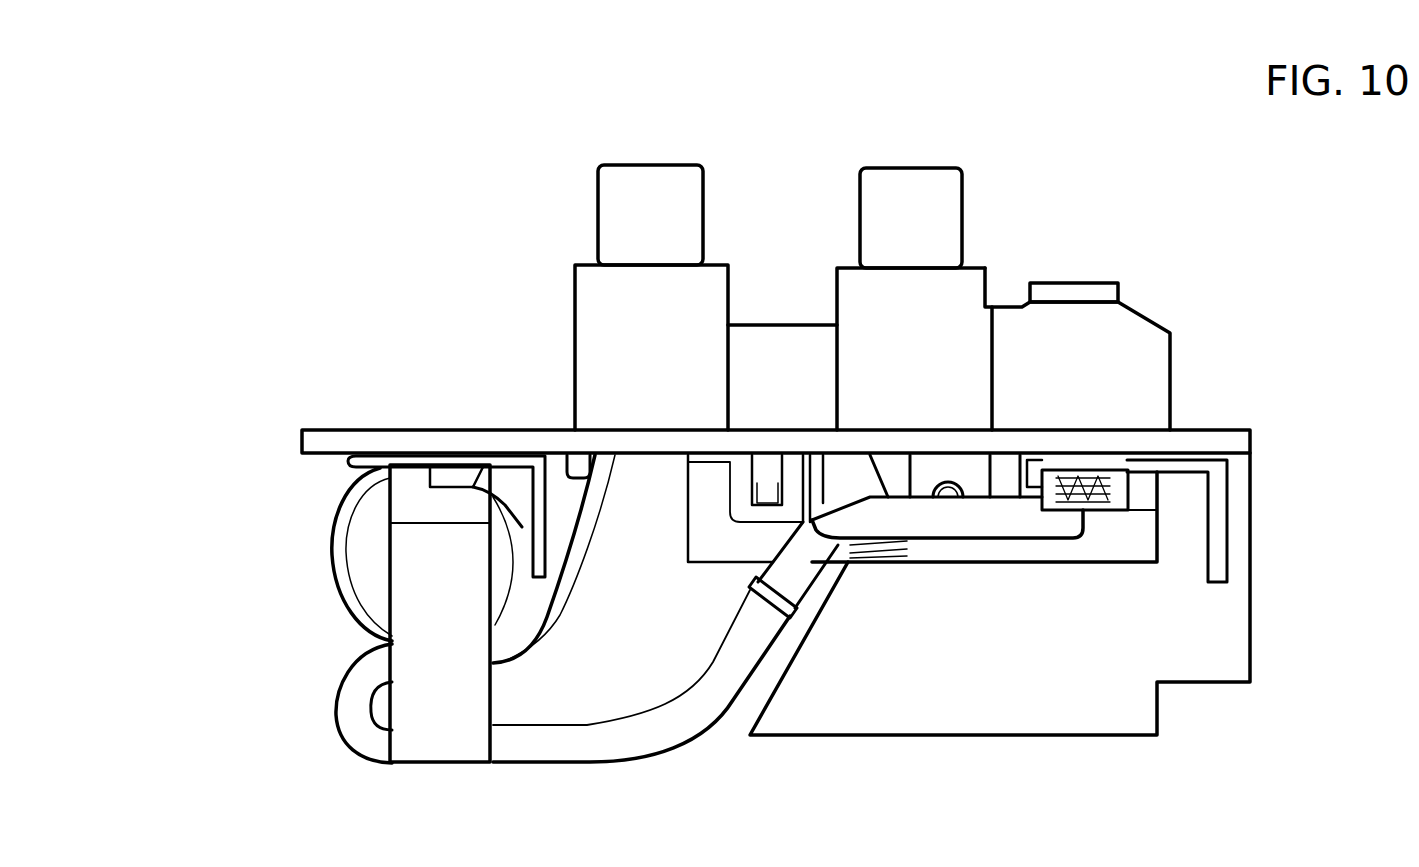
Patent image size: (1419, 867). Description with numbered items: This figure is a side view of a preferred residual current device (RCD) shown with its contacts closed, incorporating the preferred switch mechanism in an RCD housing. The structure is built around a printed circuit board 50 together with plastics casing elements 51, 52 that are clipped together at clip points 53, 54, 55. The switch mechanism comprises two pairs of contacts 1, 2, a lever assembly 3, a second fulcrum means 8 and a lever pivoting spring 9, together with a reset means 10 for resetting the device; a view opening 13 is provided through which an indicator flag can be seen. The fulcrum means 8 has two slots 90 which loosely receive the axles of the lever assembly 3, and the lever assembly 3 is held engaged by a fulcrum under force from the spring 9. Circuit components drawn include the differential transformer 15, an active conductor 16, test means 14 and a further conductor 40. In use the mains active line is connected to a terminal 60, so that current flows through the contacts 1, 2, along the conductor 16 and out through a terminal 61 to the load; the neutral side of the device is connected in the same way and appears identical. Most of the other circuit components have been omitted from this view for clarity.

The contact pair 1 is at (1113, 465).
The contact pair 2 is at (1133, 510).
The lever assembly 3 is at (1015, 527).
The second fulcrum means 8 is at (938, 470).
The lever pivoting spring 9 is at (850, 545).
The reset means 10 is at (922, 201).
The view opening 13 is at (1022, 470).
The test means 14 is at (648, 187).
The differential transformer 15 is at (427, 582).
The active conductor 16 is at (564, 745).
The conductor 40 is at (340, 522).
The printed circuit board 50 is at (362, 441).
The plastics casing element 51 is at (607, 298).
The plastics casing element 52 is at (1198, 647).
The clip 53 is at (578, 465).
The clip 54 is at (768, 495).
The clip 55 is at (1143, 495).
The terminal 60 is at (1217, 518).
The terminal 61 is at (538, 557).
The slot 90 is at (965, 472).